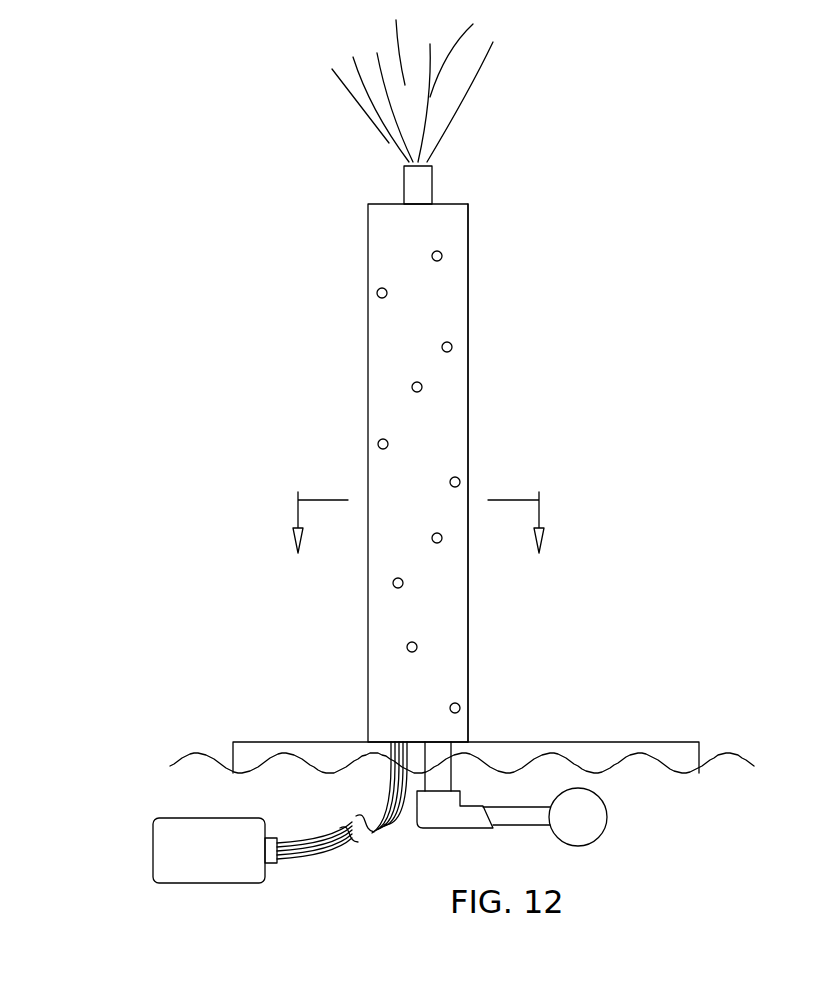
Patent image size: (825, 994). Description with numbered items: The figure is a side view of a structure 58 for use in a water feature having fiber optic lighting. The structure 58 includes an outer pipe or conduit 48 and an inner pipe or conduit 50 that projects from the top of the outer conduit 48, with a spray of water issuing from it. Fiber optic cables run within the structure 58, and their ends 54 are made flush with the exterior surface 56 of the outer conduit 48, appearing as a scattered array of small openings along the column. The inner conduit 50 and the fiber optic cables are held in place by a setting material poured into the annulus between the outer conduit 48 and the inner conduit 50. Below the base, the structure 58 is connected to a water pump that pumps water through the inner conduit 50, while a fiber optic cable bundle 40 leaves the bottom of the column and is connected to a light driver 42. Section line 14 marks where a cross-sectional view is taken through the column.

The section line 14- 14 is at (421, 525).
The fiber optic cable bundle 40 is at (307, 860).
The light driver 42 is at (167, 838).
The outer conduit 48 is at (383, 251).
The inner conduit 50 is at (432, 184).
The ends of the fiber optic cables 54 is at (412, 387).
The exterior surface 56 is at (450, 437).
The structure 58 is at (517, 275).